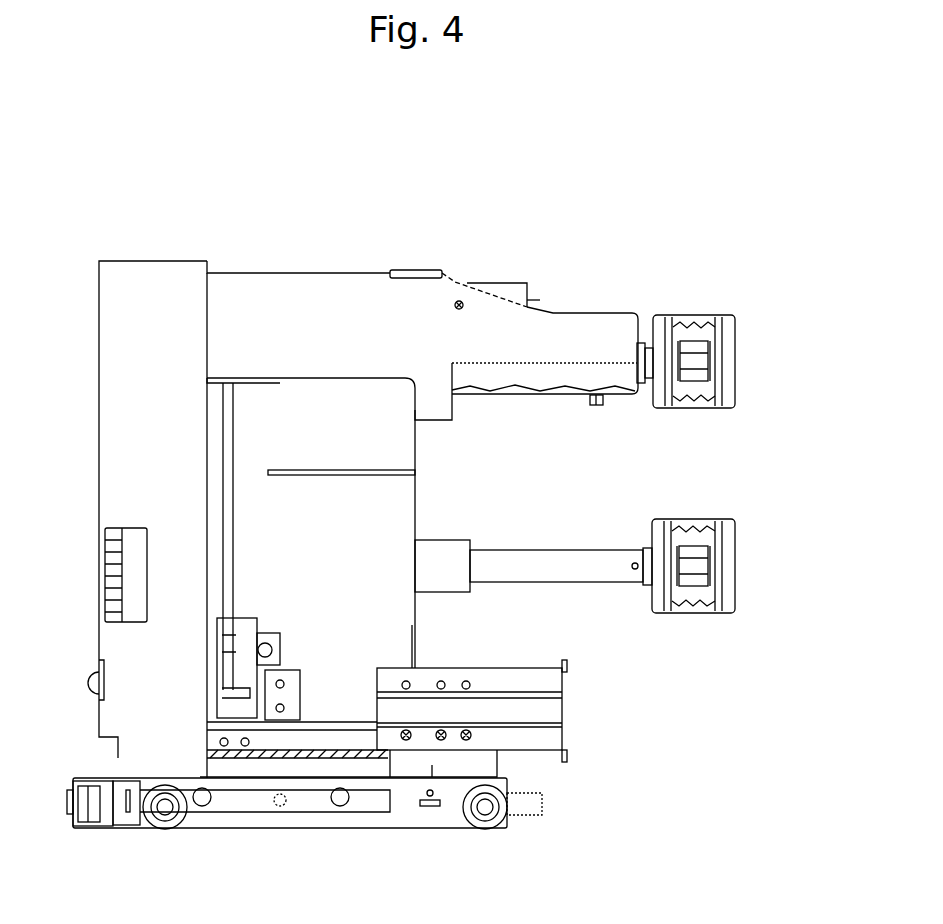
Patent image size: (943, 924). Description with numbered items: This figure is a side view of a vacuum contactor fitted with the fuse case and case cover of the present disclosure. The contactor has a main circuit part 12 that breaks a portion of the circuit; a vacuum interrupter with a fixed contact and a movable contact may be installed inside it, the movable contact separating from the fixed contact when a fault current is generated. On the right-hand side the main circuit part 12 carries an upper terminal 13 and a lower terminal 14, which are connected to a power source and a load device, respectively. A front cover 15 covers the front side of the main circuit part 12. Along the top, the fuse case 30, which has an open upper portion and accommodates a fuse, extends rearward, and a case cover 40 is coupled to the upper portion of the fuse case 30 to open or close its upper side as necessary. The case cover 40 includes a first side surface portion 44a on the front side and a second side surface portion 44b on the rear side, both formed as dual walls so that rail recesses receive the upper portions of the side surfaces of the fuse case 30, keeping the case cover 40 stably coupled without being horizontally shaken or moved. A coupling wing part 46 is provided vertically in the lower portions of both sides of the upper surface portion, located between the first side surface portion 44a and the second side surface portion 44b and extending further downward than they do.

The main circuit part 12 is at (415, 500).
The upper terminal 13 is at (728, 361).
The lower terminal 14 is at (728, 566).
The front cover 15 is at (155, 268).
The fuse case 30 is at (278, 285).
The case cover 40 is at (508, 283).
The first side surface portion 44a is at (410, 270).
The second side surface portion 44b is at (530, 300).
The coupling wing part 46 is at (459, 300).